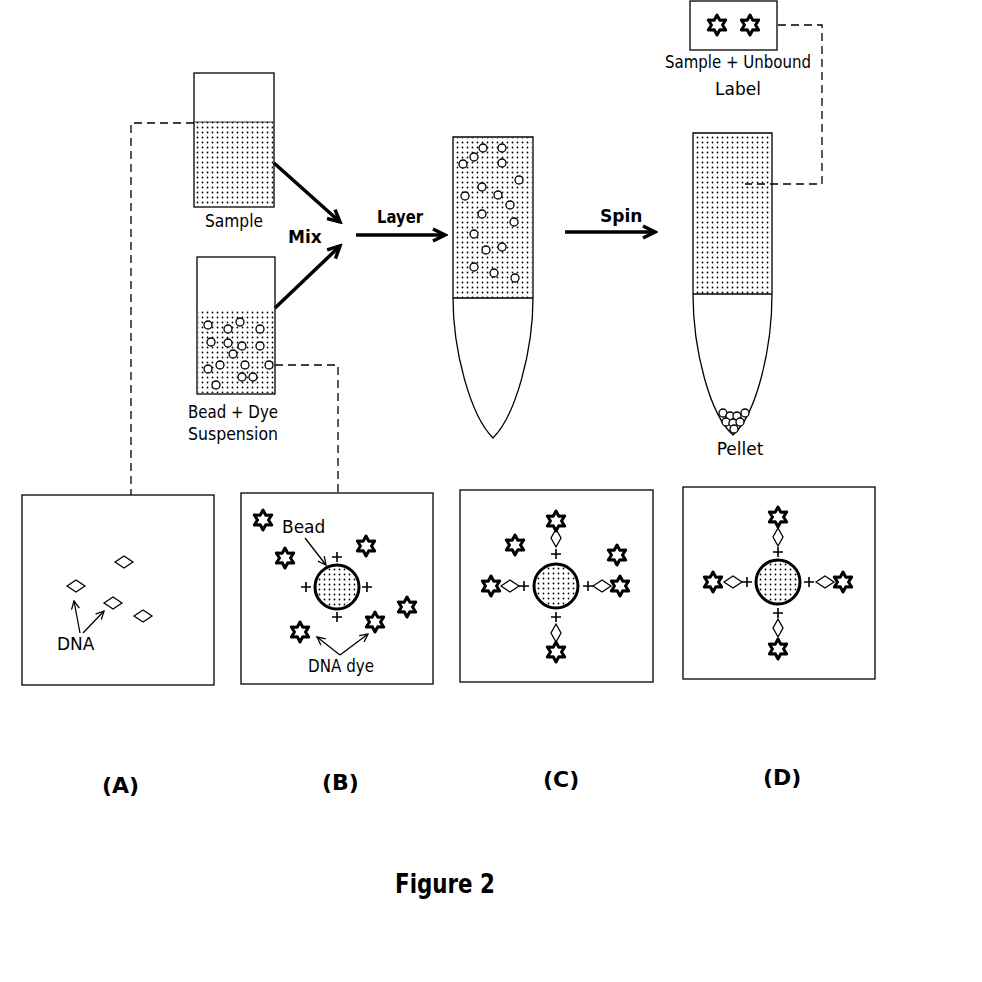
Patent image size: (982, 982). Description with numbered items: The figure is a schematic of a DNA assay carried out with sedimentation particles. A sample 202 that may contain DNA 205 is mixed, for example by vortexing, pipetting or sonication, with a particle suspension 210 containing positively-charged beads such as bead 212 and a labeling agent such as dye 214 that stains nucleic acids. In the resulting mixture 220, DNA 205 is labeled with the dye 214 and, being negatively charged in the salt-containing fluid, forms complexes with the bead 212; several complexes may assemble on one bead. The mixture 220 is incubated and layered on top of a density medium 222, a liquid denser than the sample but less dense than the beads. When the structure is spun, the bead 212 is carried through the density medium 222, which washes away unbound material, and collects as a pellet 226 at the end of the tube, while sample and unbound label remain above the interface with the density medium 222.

The sample 202 is at (172, 687).
The DNA 205 is at (131, 558).
The particle suspension 210 is at (392, 685).
The bead 212 is at (750, 414).
The dye 214 is at (370, 536).
The mixture 220 is at (519, 148).
The density medium 222 is at (606, 338).
The pellet 226 is at (712, 424).